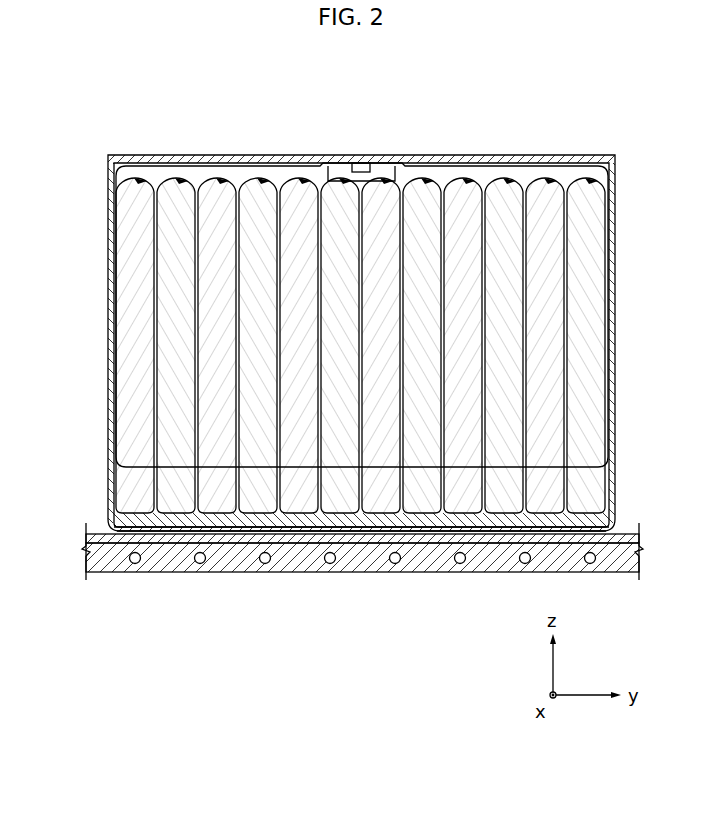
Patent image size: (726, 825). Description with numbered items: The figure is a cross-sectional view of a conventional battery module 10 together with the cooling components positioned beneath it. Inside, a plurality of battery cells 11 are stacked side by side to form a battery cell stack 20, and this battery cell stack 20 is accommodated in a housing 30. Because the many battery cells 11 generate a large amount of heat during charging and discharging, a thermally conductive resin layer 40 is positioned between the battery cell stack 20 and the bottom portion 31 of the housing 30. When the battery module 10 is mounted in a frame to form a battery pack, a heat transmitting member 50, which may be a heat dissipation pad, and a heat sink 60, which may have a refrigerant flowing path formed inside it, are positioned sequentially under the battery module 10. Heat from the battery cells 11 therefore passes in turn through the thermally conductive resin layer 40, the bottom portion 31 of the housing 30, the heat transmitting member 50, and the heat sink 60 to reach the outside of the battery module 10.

The battery module 10 is at (368, 99).
The battery cell 11 is at (588, 369).
The battery cell stack 20 is at (390, 467).
The housing 30 is at (100, 203).
The bottom portion 31 is at (147, 531).
The thermally conductive resin layer 40 is at (171, 522).
The heat transmitting member 50 is at (237, 543).
The heat sink 60 is at (303, 555).